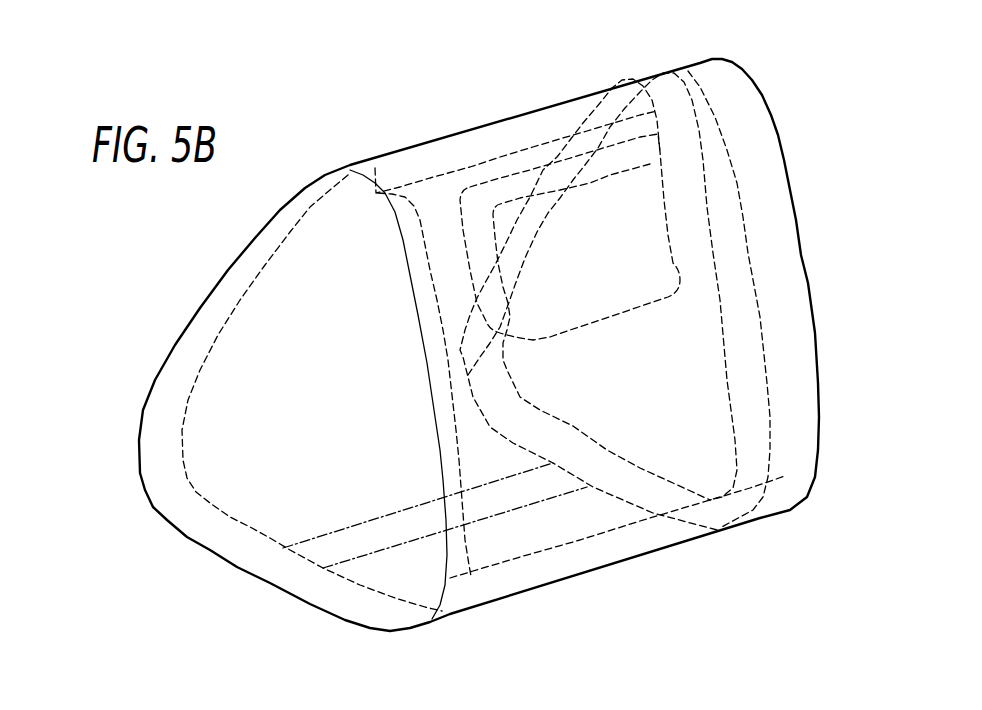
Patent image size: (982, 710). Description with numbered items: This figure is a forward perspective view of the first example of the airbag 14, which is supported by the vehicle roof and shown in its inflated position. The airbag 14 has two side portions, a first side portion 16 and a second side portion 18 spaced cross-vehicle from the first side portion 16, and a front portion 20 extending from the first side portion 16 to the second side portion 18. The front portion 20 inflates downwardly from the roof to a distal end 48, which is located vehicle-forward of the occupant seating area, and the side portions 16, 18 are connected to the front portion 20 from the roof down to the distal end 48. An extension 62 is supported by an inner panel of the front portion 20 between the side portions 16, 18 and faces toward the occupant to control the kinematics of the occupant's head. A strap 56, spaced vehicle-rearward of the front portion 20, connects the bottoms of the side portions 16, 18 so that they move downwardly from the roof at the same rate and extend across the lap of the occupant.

The airbag 14 is at (778, 56).
The first side portion 16 is at (677, 267).
The second side portion 18 is at (172, 400).
The front portion 20 is at (443, 234).
The distal end 48 is at (580, 557).
The strap 56 is at (380, 537).
The extension 62 is at (594, 222).